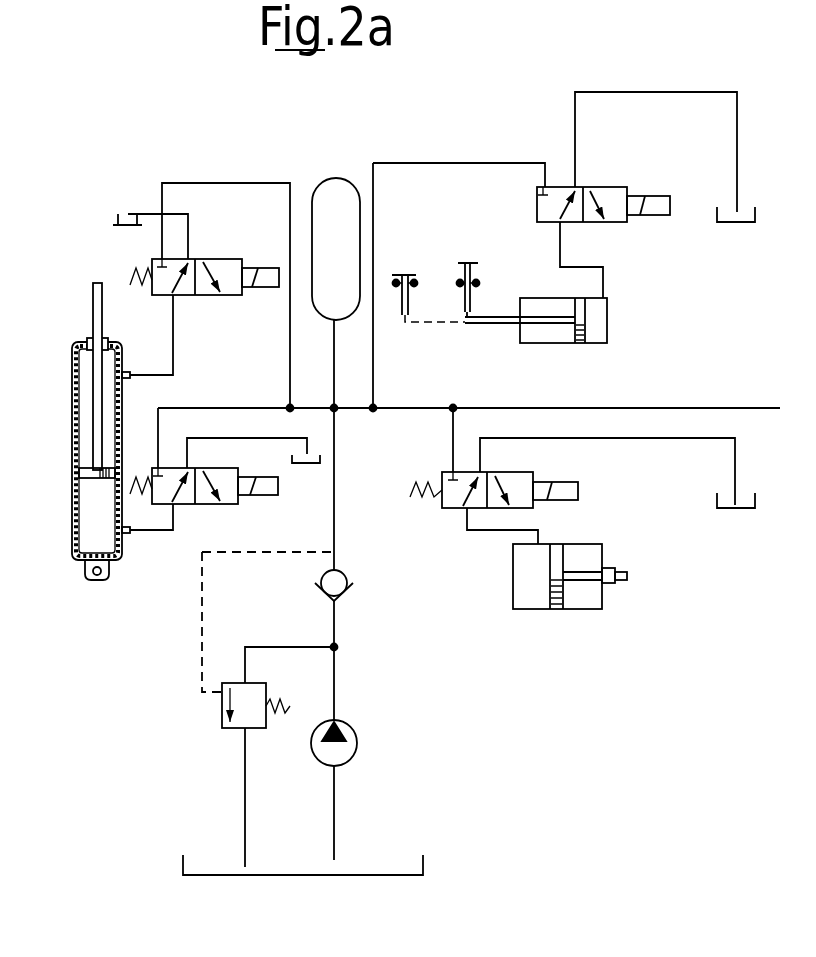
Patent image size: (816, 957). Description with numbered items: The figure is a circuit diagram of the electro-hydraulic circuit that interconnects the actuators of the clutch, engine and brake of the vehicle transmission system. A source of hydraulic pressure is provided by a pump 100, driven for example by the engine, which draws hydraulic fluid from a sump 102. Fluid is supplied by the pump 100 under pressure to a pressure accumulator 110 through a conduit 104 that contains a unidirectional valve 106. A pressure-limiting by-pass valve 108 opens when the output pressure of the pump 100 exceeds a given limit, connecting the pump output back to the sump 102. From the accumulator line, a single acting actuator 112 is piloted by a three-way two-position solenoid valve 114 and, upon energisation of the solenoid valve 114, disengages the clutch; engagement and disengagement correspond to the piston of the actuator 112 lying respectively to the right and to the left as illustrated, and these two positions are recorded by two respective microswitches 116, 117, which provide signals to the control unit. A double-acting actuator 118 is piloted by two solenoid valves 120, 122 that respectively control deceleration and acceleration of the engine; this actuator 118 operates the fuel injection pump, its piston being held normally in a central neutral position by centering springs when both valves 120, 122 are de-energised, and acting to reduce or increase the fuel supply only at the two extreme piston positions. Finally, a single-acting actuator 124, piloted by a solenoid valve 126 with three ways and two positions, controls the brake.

The pump 100 is at (357, 745).
The sump 102 is at (183, 860).
The conduit 104 is at (336, 483).
The unidirectional valve 106 is at (345, 577).
The pressure-limiting by-pass valve 108 is at (222, 705).
The pressure accumulator 110 is at (333, 195).
The single acting actuator 112 is at (552, 343).
The three-way two-position solenoid valve 114 is at (545, 222).
The microswitch 116 is at (468, 268).
The microswitch 117 is at (404, 282).
The double-acting actuator 118 is at (142, 340).
The solenoid valve 120 is at (157, 505).
The solenoid valve 122 is at (188, 296).
The single-acting actuator 124 is at (513, 587).
The solenoid valve 126 is at (520, 467).